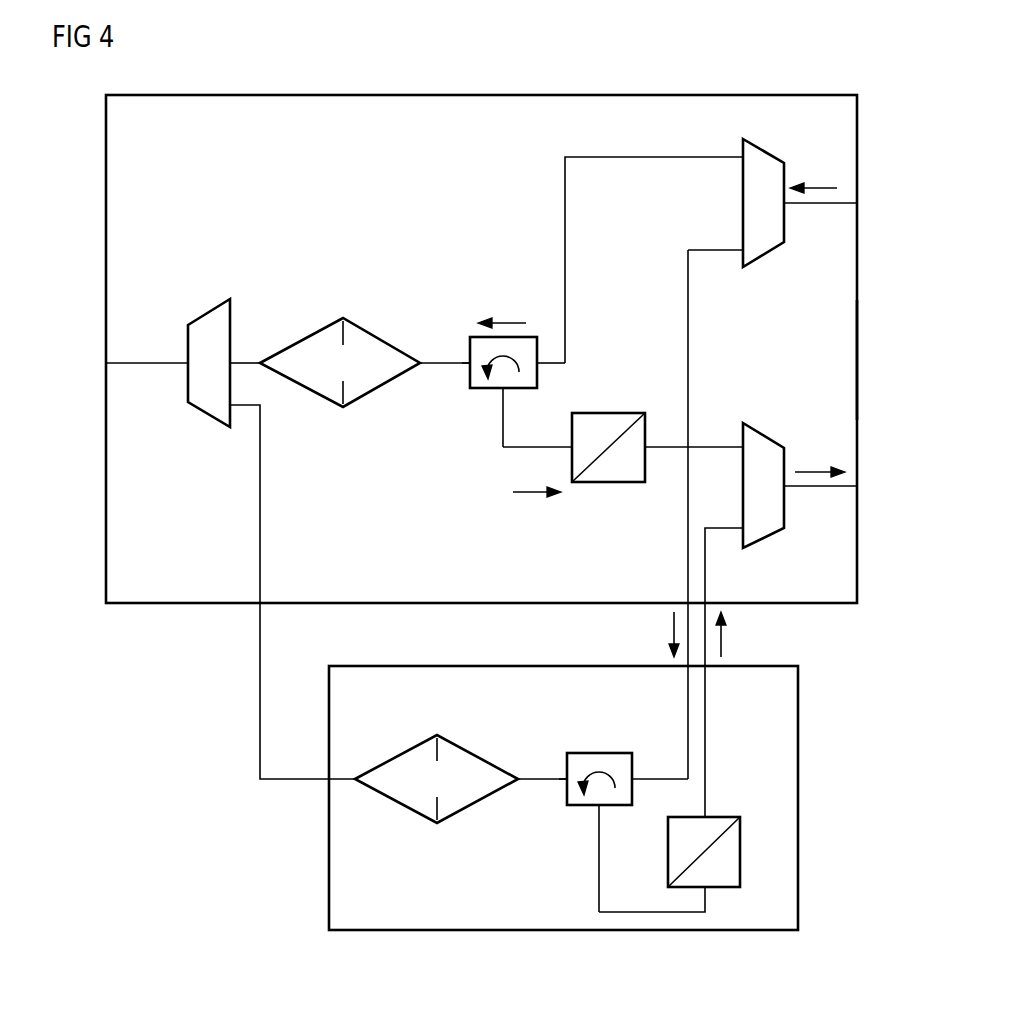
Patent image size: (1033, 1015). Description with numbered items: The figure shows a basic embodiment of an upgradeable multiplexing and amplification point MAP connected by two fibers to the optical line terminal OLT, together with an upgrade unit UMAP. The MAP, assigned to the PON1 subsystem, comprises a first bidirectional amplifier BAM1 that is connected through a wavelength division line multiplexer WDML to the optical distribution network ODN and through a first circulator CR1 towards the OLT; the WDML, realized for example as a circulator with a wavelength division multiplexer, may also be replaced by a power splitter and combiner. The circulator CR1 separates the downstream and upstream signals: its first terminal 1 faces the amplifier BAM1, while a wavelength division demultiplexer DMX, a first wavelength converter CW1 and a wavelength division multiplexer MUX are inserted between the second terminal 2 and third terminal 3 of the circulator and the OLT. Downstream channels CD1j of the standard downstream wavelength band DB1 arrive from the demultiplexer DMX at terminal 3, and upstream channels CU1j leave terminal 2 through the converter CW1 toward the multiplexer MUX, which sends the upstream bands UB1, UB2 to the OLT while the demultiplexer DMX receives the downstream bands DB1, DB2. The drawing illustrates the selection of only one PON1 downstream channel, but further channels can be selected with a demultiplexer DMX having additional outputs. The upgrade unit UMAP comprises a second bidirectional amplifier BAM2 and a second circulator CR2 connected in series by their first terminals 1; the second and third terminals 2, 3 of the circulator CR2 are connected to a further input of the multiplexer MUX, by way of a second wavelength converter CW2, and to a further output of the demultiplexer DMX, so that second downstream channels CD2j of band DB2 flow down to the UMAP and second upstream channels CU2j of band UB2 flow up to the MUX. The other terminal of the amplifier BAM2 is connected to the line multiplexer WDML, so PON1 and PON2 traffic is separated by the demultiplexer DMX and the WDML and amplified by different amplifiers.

The multiplexing and amplification point MAP is at (481, 349).
The upgrade unit UMAP is at (563, 798).
The optical line terminal OLT is at (884, 360).
The optical distribution network ODN is at (117, 362).
The wavelength division line multiplexer WDML is at (209, 311).
The first bidirectional amplifier BAM1 is at (400, 313).
The second bidirectional amplifier BAM2 is at (460, 811).
The first circulator CR1 is at (478, 390).
The second circulator CR2 is at (598, 753).
The first wavelength converter CW1 is at (606, 413).
The second wavelength converter CW2 is at (727, 817).
The first downstream channels CD1j is at (509, 305).
The first upstream channels CU1j is at (540, 473).
The second downstream channels CD2j is at (646, 634).
The second upstream channels CU2j is at (751, 634).
The wavelength division demultiplexer DMX is at (762, 256).
The wavelength division multiplexer MUX is at (768, 536).
The standard downstream wavelength band DB1 is at (820, 161).
The second downstream wavelength band DB2 is at (818, 171).
The first upstream wavelength band UB1 is at (820, 445).
The second upstream wavelength band UB2 is at (820, 455).
The first circulator terminal 1 is at (507, 586).
The second circulator terminal 2 is at (543, 650).
The third circulator terminal 3 is at (612, 587).